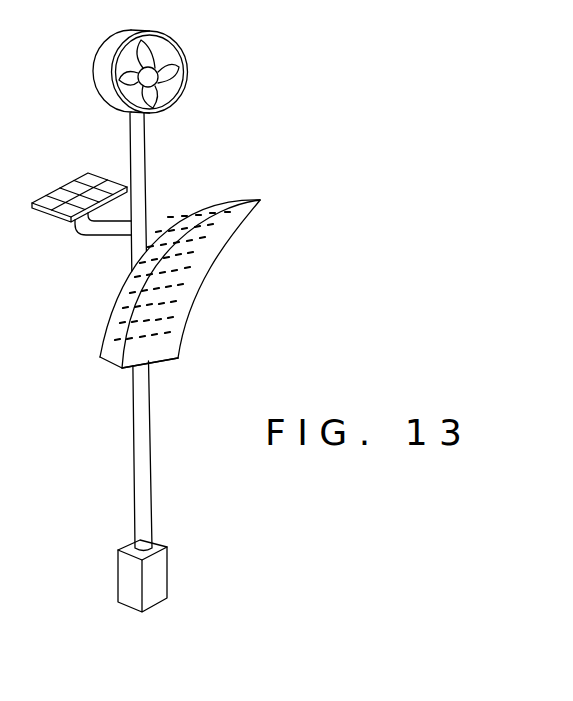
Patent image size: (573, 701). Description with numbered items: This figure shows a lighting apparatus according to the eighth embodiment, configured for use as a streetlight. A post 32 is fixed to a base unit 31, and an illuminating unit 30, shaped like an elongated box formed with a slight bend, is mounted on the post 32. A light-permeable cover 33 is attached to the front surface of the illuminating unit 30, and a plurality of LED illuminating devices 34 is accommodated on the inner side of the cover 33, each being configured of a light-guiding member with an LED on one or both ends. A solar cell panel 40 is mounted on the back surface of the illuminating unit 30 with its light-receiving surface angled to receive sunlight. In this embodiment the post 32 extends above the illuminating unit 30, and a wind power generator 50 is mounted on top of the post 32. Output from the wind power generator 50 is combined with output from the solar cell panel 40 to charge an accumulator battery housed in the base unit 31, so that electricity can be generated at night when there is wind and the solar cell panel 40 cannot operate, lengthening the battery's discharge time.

The illuminating unit 30 is at (215, 272).
The base unit 31 is at (157, 570).
The post 32 is at (143, 437).
The light-permeable cover 33 is at (172, 350).
The LED illuminating devices 34 is at (183, 317).
The solar cell panel 40 is at (50, 182).
The wind power generator 50 is at (196, 91).